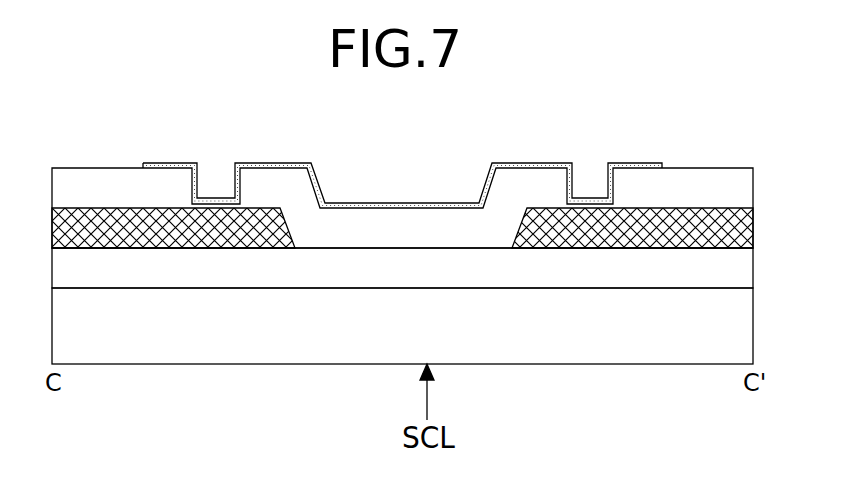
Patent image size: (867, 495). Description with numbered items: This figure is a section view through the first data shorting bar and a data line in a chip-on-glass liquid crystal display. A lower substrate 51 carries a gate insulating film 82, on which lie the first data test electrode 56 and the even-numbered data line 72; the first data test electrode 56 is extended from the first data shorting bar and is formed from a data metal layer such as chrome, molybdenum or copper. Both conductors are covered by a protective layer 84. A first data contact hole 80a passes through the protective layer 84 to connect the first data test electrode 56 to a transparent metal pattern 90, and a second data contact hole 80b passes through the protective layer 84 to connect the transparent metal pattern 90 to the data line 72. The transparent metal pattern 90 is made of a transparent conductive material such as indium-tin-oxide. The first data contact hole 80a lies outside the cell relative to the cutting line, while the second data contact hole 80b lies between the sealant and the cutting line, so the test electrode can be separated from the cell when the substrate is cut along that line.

The lower substrate 51 is at (753, 337).
The gate insulating film 82 is at (753, 263).
The data line 72 is at (753, 232).
The protective layer 84 is at (753, 190).
The first data contact hole 80a is at (213, 172).
The second data contact hole 80b is at (588, 178).
The transparent metal pattern 90 is at (648, 160).
The first data test electrode 56 is at (152, 248).